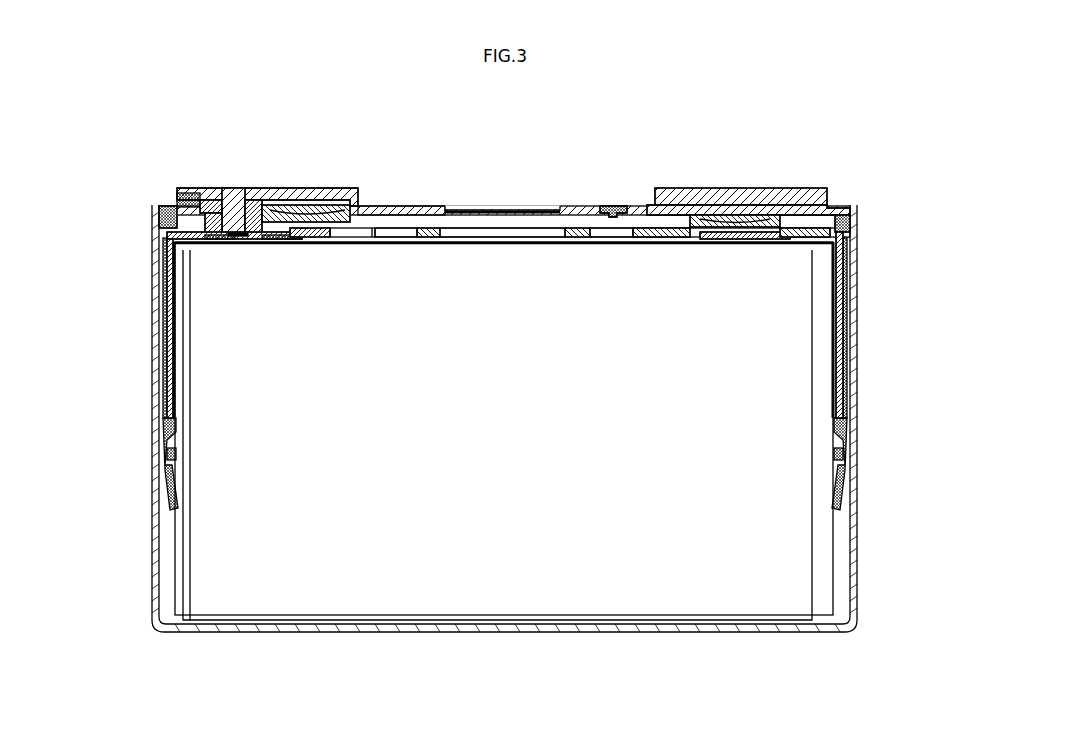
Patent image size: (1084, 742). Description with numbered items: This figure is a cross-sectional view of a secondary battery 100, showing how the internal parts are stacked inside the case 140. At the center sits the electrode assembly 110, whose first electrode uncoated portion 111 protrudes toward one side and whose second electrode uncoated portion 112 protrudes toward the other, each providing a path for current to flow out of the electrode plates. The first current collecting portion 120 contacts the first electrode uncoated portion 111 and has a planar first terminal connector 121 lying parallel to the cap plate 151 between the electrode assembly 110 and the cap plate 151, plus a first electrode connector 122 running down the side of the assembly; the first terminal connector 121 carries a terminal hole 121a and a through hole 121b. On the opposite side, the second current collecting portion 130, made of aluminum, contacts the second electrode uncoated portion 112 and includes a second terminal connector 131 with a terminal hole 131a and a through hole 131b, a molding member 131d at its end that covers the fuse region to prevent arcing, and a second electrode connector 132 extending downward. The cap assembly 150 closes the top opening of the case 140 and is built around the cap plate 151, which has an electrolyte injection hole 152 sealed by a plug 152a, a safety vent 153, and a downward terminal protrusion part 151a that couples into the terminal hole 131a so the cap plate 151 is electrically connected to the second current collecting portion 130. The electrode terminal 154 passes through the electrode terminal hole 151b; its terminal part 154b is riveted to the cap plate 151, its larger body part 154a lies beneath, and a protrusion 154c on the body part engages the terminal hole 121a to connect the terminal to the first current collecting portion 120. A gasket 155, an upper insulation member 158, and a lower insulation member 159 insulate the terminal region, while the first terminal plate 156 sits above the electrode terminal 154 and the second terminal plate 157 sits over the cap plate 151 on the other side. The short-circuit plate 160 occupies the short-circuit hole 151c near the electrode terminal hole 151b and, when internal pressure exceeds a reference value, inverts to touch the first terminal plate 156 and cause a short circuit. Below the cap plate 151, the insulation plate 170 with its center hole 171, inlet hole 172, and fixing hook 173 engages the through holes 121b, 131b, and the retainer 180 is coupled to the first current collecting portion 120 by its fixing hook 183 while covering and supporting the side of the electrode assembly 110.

The secondary battery 100 is at (55, 93).
The electrode assembly 110 is at (289, 615).
The first electrode uncoated portion 111 is at (176, 331).
The second electrode uncoated portion 112 is at (832, 365).
The first current collecting portion 120 is at (90, 225).
The first terminal connector 121 is at (162, 238).
The terminal hole 121a is at (230, 240).
The through hole 121b is at (280, 240).
The first electrode connector 122 is at (168, 268).
The second current collecting portion 130 is at (915, 225).
The second terminal connector 131 is at (850, 228).
The terminal hole 131a is at (765, 240).
The through hole 131b is at (700, 238).
The molding member 131d is at (848, 216).
The second electrode connector 132 is at (847, 268).
The case 140 is at (855, 320).
The cap assembly 150 is at (562, 165).
The cap plate 151 is at (441, 206).
The terminal protrusion part 151a is at (790, 238).
The electrode terminal hole 151b is at (242, 236).
The short-circuit hole 151c is at (305, 237).
The electrolyte injection hole 152 is at (612, 238).
The plug 152a is at (612, 206).
The safety vent 153 is at (511, 209).
The electrode terminal 154 is at (172, 135).
The body part 154a is at (203, 187).
The terminal part 154b is at (233, 190).
The protrusion 154c is at (260, 189).
The gasket 155 is at (180, 196).
The first terminal plate 156 is at (315, 188).
The second terminal plate 157 is at (797, 188).
The upper insulation member 158 is at (392, 206).
The lower insulation member 159 is at (165, 212).
The short-circuit plate 160 is at (342, 196).
The insulation plate 170 is at (645, 228).
The center hole 171 is at (504, 232).
The inlet hole 172 is at (400, 232).
The fixing hook 173 is at (733, 206).
The retainer 180 is at (166, 394).
The fixing hook 183 is at (168, 455).